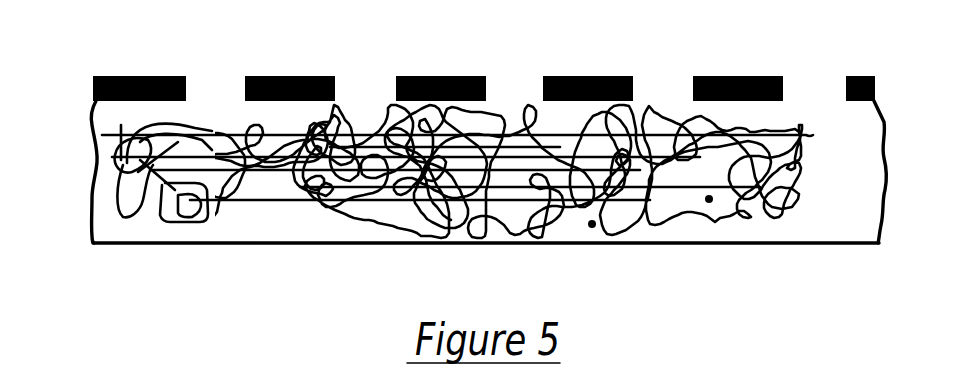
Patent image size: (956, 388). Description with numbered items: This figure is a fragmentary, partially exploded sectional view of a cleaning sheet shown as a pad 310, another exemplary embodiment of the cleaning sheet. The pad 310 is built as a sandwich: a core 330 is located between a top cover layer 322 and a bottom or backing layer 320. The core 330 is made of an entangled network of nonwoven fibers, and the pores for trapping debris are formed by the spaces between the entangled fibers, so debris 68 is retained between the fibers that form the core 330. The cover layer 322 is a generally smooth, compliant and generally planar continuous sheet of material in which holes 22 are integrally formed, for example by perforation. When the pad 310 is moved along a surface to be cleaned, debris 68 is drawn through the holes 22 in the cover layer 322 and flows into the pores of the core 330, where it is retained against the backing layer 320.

The pad 310 is at (664, 54).
The top cover layer 322 is at (135, 76).
The core 330 is at (79, 191).
The bottom or backing layer 320 is at (762, 244).
The holes 22 is at (369, 72).
The debris 68 is at (592, 226).